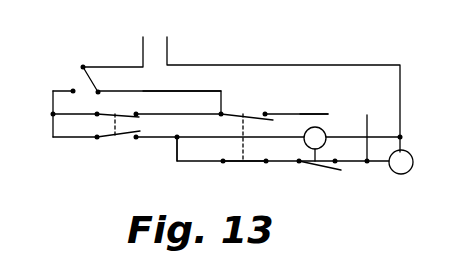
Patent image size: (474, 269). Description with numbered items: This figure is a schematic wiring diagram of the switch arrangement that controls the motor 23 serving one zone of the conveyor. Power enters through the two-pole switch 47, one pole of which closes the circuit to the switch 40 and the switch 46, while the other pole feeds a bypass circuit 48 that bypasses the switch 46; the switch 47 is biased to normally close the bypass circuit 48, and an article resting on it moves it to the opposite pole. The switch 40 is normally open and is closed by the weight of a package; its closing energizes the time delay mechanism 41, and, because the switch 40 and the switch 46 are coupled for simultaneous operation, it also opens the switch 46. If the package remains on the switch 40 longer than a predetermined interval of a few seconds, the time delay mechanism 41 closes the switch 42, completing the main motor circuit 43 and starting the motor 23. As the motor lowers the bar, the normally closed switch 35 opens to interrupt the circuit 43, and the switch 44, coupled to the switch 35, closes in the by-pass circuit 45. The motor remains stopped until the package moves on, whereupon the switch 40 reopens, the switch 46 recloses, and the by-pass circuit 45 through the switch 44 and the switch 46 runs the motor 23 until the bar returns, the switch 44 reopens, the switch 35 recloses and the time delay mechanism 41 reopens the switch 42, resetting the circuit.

The switch 47 is at (85, 75).
The switch 46 is at (115, 117).
The switch 40 is at (115, 138).
The bypass circuit 48 is at (192, 88).
The switch 44 is at (232, 113).
The by-pass circuit 45 is at (322, 113).
The time delay mechanism 41 is at (323, 130).
The motor 23 is at (412, 153).
The main motor circuit 43 is at (175, 154).
The switch 35 is at (246, 163).
The switch 42 is at (322, 168).